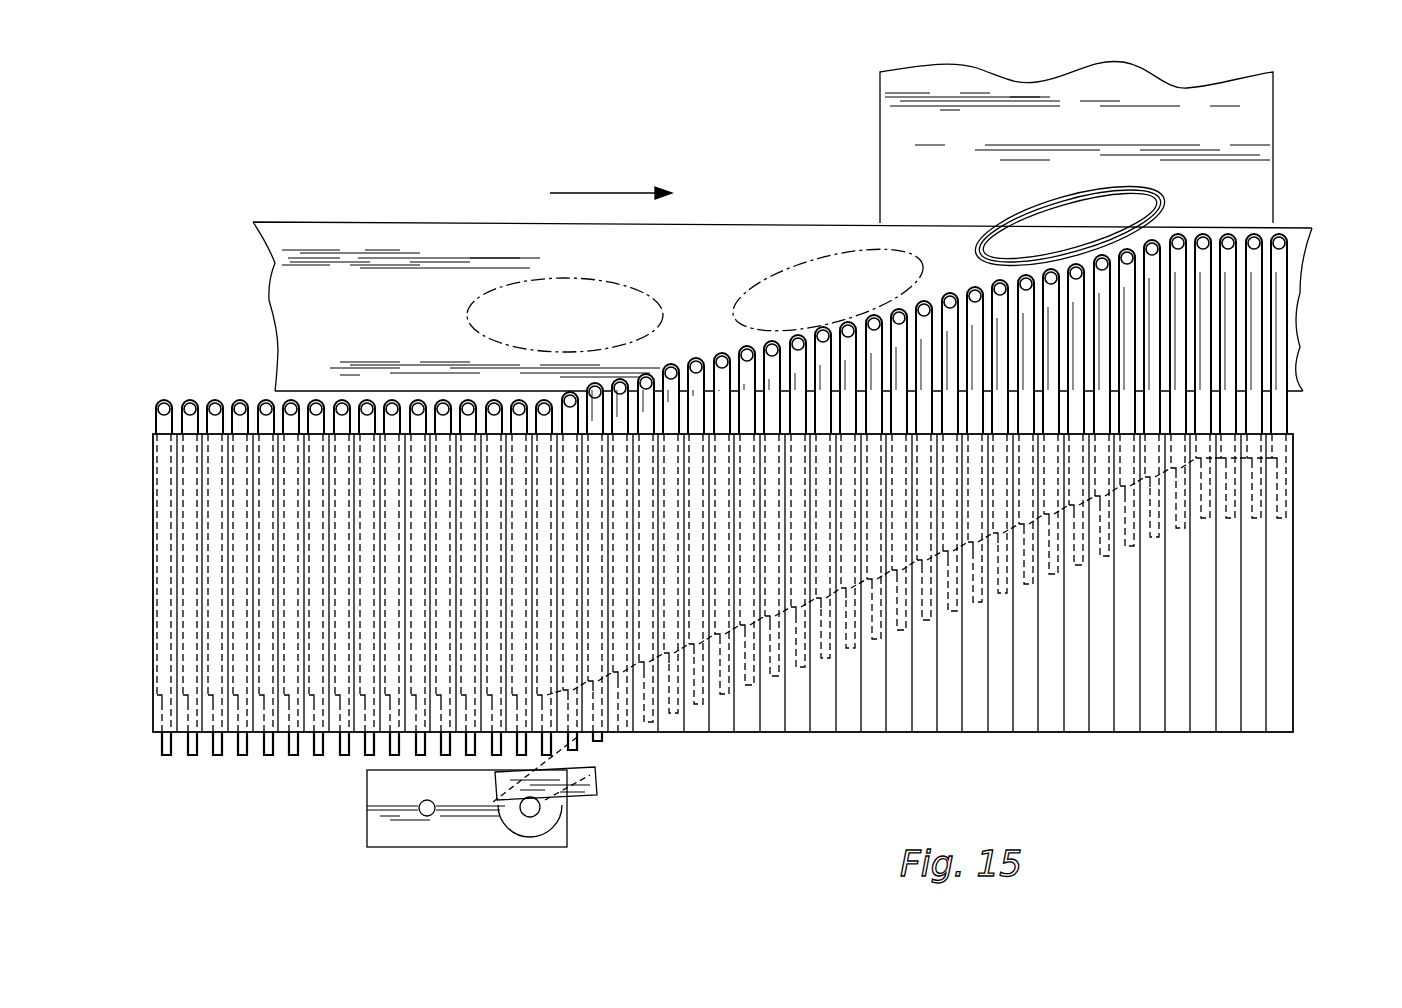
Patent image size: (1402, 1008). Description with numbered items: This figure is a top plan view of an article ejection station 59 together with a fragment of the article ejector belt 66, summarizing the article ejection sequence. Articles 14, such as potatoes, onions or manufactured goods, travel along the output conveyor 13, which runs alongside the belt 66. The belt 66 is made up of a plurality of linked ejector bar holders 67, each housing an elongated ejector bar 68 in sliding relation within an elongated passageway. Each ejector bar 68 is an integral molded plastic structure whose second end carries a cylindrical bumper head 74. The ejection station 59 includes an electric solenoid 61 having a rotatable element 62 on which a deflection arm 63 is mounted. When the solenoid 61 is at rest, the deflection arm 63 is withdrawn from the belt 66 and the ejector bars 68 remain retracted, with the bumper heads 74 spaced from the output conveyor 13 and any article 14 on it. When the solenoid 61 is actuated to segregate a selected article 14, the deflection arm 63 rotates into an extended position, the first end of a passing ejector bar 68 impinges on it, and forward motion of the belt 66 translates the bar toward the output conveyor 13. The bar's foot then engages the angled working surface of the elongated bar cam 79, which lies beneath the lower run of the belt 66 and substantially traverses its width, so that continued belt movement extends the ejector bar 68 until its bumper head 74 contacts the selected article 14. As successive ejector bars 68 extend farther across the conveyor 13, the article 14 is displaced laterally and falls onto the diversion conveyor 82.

The output conveyor 13 is at (411, 222).
The article 14 is at (512, 285).
The article ejection station 59 is at (515, 812).
The electric solenoid 61 is at (465, 833).
The rotatable element 62 is at (542, 836).
The deflection arm 63 is at (582, 745).
The article ejector belt 66 is at (1322, 547).
The ejector bar holder 67 is at (1285, 682).
The ejector bar 68 is at (1290, 272).
The cylindrical bumper head 74 is at (673, 362).
The bar cam 79 is at (1298, 455).
The diversion conveyor 82 is at (1275, 150).